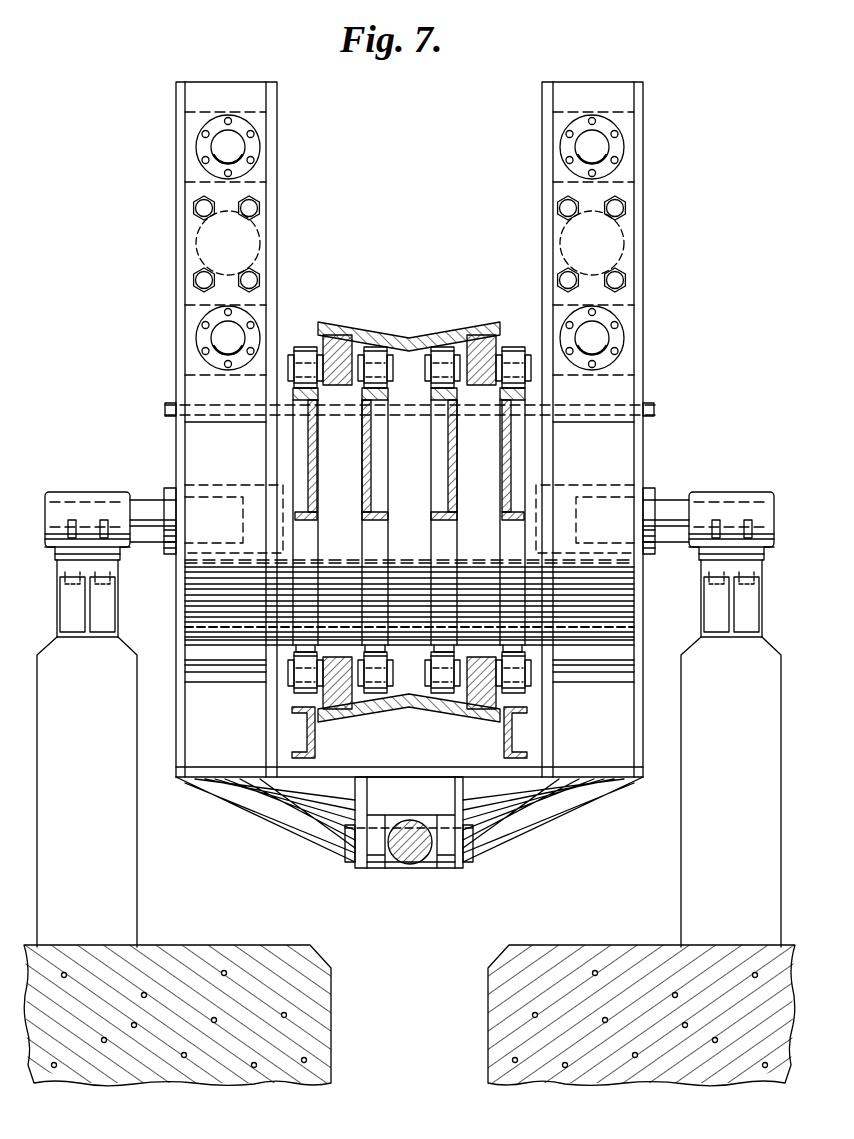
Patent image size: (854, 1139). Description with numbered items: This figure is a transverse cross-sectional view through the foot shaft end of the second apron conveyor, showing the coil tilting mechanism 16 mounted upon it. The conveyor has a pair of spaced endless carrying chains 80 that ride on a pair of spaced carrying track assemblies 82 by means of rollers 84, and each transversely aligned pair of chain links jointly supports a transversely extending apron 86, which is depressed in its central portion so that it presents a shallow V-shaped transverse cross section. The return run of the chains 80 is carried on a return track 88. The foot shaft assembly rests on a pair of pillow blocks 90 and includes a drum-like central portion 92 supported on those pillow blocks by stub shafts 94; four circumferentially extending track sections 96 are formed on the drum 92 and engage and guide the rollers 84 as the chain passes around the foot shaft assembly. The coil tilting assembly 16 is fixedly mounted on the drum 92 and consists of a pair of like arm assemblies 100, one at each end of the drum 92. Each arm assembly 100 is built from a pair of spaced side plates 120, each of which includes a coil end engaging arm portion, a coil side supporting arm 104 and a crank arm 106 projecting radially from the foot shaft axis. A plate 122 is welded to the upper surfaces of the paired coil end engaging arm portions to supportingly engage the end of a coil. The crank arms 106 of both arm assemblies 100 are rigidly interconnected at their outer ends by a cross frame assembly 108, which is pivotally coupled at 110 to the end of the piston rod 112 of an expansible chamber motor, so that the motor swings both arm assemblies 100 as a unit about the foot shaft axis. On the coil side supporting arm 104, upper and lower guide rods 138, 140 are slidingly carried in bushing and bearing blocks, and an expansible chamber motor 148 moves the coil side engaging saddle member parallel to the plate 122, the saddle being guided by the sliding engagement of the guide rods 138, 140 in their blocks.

The tilting mechanism 16 is at (648, 125).
The endless carrying chains 80 is at (332, 337).
The carrying track assemblies 82 is at (317, 448).
The rollers 84 is at (294, 347).
The apron 86 is at (432, 328).
The return track 88 is at (315, 742).
The pillow blocks 90 is at (80, 492).
The drum 92 is at (407, 487).
The stub shafts 94 is at (153, 500).
The track sections 96 is at (368, 550).
The arm assemblies 100 is at (176, 275).
The coil side supporting arm 104 is at (277, 128).
The crank arm 106 is at (222, 699).
The cross frame assembly 108 is at (540, 808).
The pivotal coupling 110 is at (388, 818).
The piston rod 112 is at (411, 864).
The side plates 120 is at (176, 160).
The plate 122 is at (165, 409).
The upper guide rod 138 is at (228, 147).
The lower guide rod 140 is at (228, 338).
The expansible chamber motor 148 is at (258, 246).